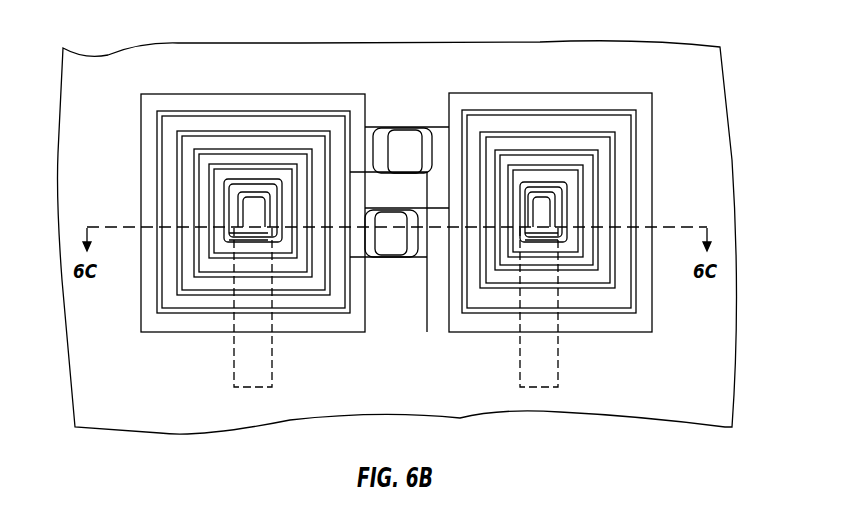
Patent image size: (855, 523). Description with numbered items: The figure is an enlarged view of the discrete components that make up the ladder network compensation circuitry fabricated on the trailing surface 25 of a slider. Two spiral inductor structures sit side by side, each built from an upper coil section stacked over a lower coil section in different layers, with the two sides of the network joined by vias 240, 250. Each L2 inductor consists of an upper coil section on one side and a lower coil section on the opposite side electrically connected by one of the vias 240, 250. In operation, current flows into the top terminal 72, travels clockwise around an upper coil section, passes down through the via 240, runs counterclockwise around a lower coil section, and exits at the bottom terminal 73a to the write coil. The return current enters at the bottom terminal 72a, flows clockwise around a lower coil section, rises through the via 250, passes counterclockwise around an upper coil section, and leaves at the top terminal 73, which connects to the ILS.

The trailing surface 25 is at (548, 53).
The top terminal 72 is at (547, 210).
The bottom terminal 72a is at (551, 357).
The top terminal 73 is at (247, 209).
The bottom terminal 73a is at (241, 357).
The via 240 is at (391, 257).
The via 250 is at (403, 137).